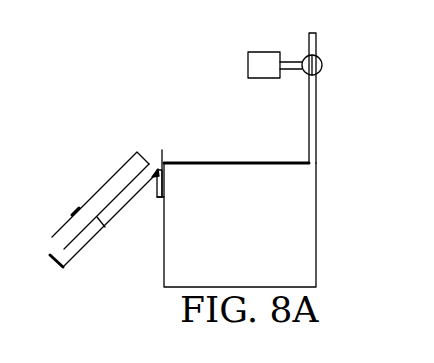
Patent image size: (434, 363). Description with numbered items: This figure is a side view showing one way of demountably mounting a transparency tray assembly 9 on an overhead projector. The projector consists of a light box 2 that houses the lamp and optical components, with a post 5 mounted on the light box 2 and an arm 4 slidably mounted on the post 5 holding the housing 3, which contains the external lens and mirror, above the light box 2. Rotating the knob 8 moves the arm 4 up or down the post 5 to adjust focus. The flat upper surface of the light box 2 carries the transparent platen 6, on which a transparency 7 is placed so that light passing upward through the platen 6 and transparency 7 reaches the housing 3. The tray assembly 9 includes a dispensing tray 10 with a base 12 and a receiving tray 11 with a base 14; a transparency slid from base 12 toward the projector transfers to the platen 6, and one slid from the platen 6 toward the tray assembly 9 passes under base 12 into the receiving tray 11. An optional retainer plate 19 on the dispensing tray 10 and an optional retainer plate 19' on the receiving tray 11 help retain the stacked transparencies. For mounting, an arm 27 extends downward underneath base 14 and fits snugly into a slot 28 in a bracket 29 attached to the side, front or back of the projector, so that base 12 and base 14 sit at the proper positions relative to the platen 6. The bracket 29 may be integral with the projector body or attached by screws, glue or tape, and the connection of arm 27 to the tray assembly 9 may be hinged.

The light box 2 is at (252, 246).
The housing 3 is at (259, 63).
The arm 4 is at (297, 62).
The post 5 is at (315, 117).
The platen 6 is at (300, 165).
The transparency 7 is at (275, 160).
The knob 8 is at (317, 65).
The tray assembly 9 is at (97, 88).
The dispensing tray 10 is at (136, 149).
The receiving tray 11 is at (72, 267).
The base 12 is at (103, 225).
The base 14 is at (82, 252).
The retainer plate 19 is at (52, 205).
The retainer plate 19' is at (45, 244).
The arm 27 is at (165, 184).
The slot 28 is at (171, 141).
The bracket 29 is at (152, 191).